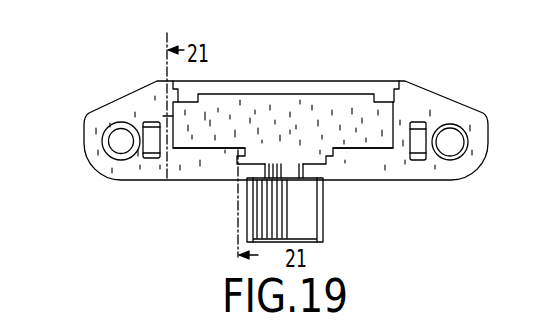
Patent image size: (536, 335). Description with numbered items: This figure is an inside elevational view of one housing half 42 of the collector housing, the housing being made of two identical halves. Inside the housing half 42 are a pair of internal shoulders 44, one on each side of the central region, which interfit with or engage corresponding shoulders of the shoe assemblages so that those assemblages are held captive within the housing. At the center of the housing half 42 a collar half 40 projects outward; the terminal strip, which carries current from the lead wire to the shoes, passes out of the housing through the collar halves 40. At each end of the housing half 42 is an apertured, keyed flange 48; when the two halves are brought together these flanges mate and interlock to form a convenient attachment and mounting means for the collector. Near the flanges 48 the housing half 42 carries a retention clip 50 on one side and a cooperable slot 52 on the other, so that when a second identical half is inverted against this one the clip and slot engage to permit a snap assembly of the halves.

The collar half 40 is at (305, 222).
The housing half 42 is at (226, 72).
The internal shoulder 44 is at (207, 150).
The flange 48 is at (107, 165).
The retention clip 50 is at (418, 121).
The slot 52 is at (152, 121).